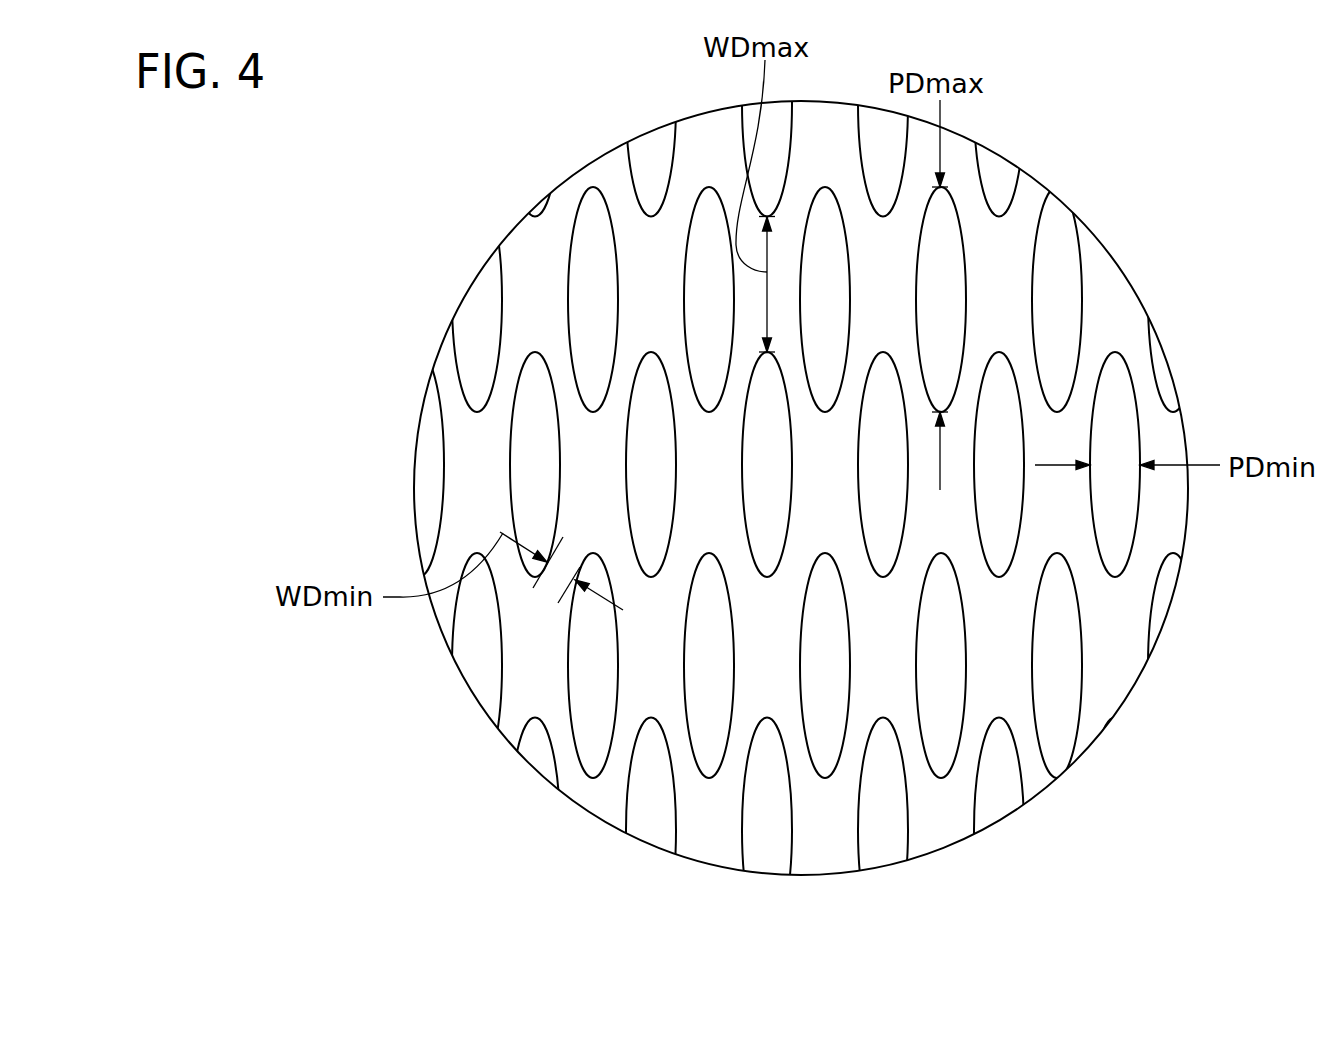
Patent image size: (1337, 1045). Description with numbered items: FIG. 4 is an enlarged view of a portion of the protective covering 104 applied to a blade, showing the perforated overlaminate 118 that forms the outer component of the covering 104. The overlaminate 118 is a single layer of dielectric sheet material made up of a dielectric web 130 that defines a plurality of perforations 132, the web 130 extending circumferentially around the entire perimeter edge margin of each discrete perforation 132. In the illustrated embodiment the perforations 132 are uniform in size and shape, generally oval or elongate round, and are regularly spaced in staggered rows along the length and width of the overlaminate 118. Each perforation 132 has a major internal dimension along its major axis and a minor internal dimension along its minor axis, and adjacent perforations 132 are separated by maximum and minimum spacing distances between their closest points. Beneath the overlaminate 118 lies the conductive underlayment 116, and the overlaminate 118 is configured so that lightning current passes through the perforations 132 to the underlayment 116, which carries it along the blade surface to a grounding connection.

The protective covering 104 is at (1090, 140).
The overlaminate 118 is at (1112, 289).
The perforation 132 is at (605, 262).
The underlayment 116 is at (990, 807).
The dielectric web 130 is at (708, 833).